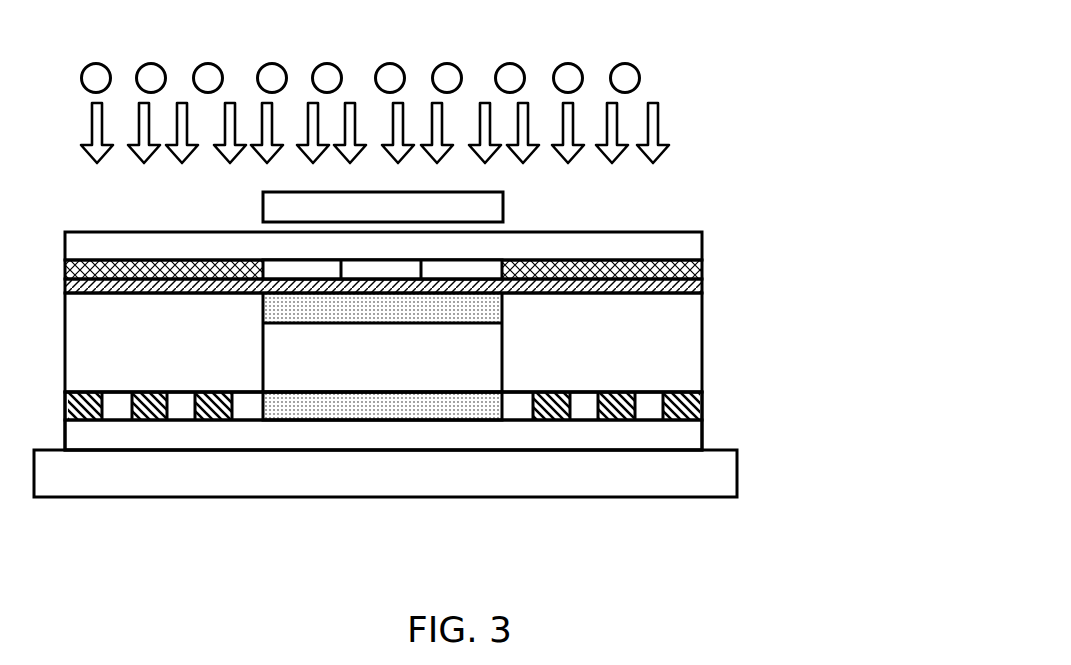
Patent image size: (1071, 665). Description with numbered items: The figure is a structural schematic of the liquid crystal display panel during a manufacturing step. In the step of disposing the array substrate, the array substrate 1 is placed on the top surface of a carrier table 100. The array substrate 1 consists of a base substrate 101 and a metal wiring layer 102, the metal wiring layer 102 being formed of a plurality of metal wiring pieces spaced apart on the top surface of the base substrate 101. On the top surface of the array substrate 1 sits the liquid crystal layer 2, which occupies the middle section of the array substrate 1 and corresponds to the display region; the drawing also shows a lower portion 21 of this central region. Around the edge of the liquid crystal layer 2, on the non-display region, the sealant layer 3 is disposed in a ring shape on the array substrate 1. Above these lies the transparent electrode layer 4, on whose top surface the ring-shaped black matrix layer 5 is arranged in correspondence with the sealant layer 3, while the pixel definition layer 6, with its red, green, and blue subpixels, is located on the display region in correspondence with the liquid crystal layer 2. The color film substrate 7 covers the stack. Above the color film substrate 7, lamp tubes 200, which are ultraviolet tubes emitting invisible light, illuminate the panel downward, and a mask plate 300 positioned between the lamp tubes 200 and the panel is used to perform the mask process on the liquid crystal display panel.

The lamp tubes 200 is at (580, 68).
The mask plate 300 is at (287, 212).
The color film substrate 7 is at (673, 252).
The black matrix layer 5 is at (680, 275).
The pixel definition layer 6 is at (477, 270).
The transparent electrode layer 4 is at (680, 290).
The sealant layer 3 is at (673, 348).
The liquid crystal layer 2 is at (500, 370).
The light emitting layer 21 is at (332, 403).
The metal wiring layer 102 is at (698, 403).
The base substrate 101 is at (693, 437).
The carrier table 100 is at (700, 477).
The array substrate 1 is at (832, 388).